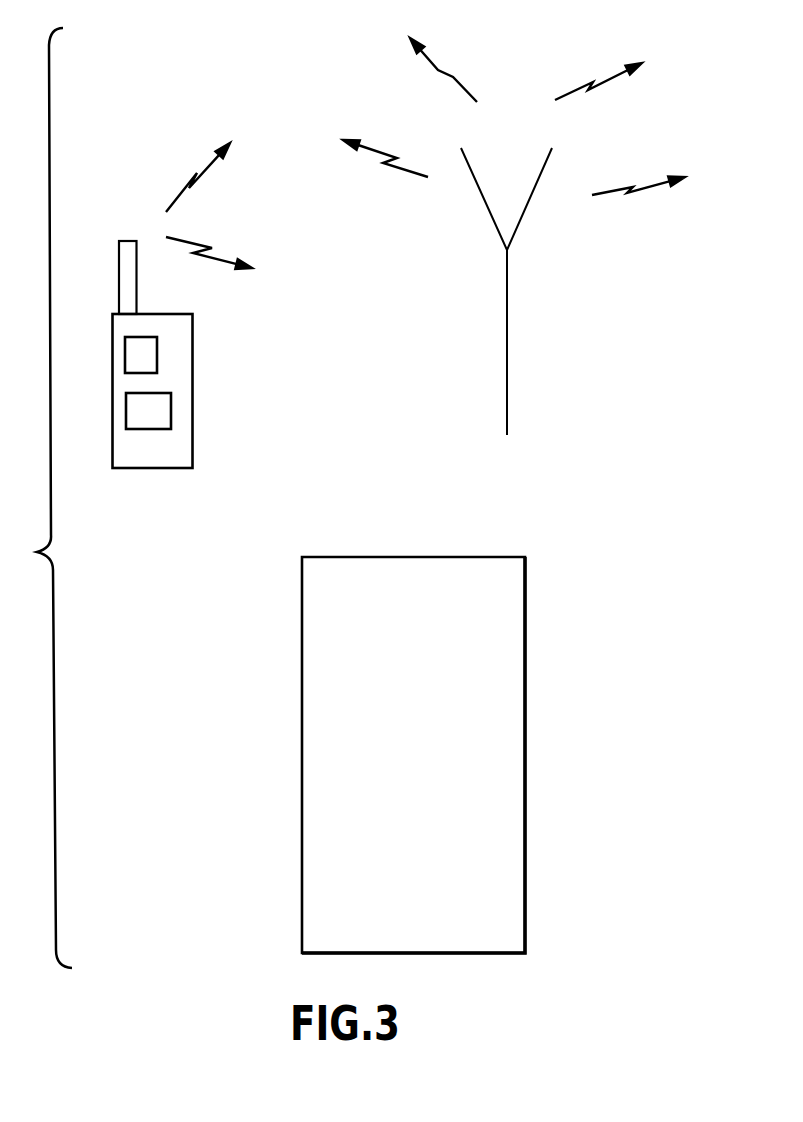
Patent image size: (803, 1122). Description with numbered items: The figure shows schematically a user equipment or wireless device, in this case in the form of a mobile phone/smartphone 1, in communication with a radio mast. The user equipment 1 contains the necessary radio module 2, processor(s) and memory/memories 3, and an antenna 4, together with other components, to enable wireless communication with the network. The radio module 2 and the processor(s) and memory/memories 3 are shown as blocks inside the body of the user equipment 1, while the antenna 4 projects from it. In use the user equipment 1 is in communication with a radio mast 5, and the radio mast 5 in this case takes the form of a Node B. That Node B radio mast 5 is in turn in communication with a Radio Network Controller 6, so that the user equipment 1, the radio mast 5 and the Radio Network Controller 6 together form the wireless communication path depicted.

The user equipment 1 is at (112, 355).
The radio module 2 is at (148, 358).
The processor(s) and memory/memories 3 is at (135, 418).
The antenna 4 is at (127, 271).
The radio mast 5 is at (507, 342).
The Radio Network Controller 6 is at (303, 753).